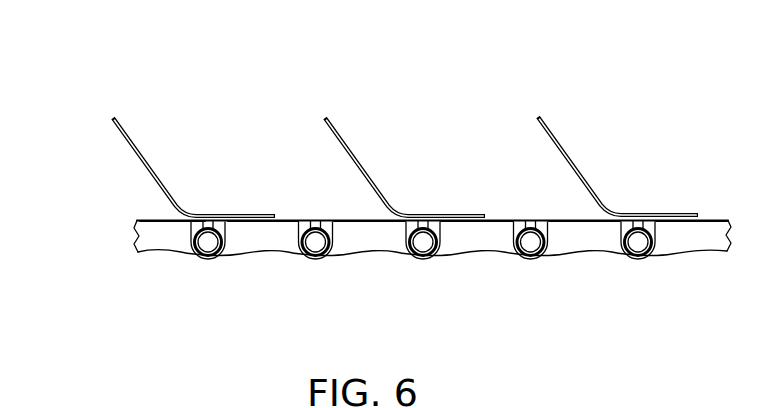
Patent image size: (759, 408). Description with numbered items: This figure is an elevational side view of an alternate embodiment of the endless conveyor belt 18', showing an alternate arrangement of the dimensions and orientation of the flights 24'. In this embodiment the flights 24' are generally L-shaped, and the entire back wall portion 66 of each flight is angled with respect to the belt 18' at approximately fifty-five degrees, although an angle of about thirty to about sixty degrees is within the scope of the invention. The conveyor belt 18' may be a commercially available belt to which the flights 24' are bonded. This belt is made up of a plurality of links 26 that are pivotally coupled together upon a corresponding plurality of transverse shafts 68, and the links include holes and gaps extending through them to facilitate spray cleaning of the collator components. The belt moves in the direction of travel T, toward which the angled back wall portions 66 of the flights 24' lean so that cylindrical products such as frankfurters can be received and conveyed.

The conveyor belt 18' is at (432, 204).
The flights 24' is at (405, 122).
The links 26 is at (705, 278).
The back wall portion 66 is at (349, 118).
The transverse shafts 68 is at (208, 244).
The direction of travel T is at (402, 319).